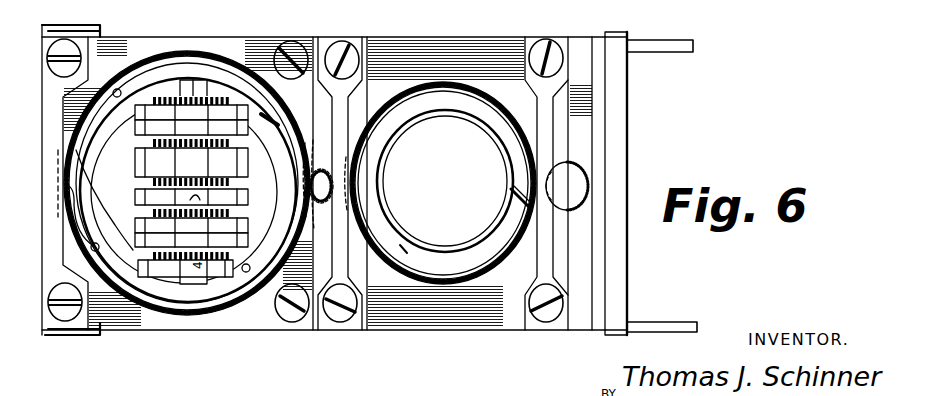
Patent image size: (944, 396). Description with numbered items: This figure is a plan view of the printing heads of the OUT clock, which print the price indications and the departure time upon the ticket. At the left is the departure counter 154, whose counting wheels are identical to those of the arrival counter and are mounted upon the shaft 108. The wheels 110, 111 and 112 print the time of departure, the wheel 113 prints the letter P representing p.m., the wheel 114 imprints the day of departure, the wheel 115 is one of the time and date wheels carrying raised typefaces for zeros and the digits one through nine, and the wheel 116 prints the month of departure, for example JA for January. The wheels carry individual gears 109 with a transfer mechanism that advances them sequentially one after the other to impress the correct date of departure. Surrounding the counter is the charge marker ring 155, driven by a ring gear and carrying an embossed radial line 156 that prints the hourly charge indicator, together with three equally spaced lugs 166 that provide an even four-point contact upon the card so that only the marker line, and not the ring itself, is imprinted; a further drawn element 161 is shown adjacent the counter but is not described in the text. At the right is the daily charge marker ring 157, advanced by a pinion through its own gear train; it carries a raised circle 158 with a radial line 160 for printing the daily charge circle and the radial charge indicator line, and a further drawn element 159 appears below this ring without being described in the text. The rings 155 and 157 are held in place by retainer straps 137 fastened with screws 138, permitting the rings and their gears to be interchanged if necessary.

The shaft 108 is at (196, 80).
The individual gears 109 is at (158, 262).
The time wheel 110 is at (137, 117).
The time wheel 111 is at (142, 129).
The time wheel 112 is at (138, 164).
The wheel 113 is at (138, 196).
The day wheel 114 is at (140, 222).
The date wheel 115 is at (137, 241).
The month wheel 116 is at (273, 232).
The retainer straps 137 is at (92, 54).
The screws 138 is at (67, 313).
The departure counter 154 is at (130, 254).
The charge marker ring 155 is at (218, 292).
The embossed radial line 156 is at (279, 106).
The daily charge marker ring 157 is at (447, 263).
The raised circle 158 is at (400, 250).
The toothed dial ring 159 is at (443, 281).
The radial line 160 is at (522, 201).
The pin 161 is at (114, 96).
The lugs 166 is at (67, 185).